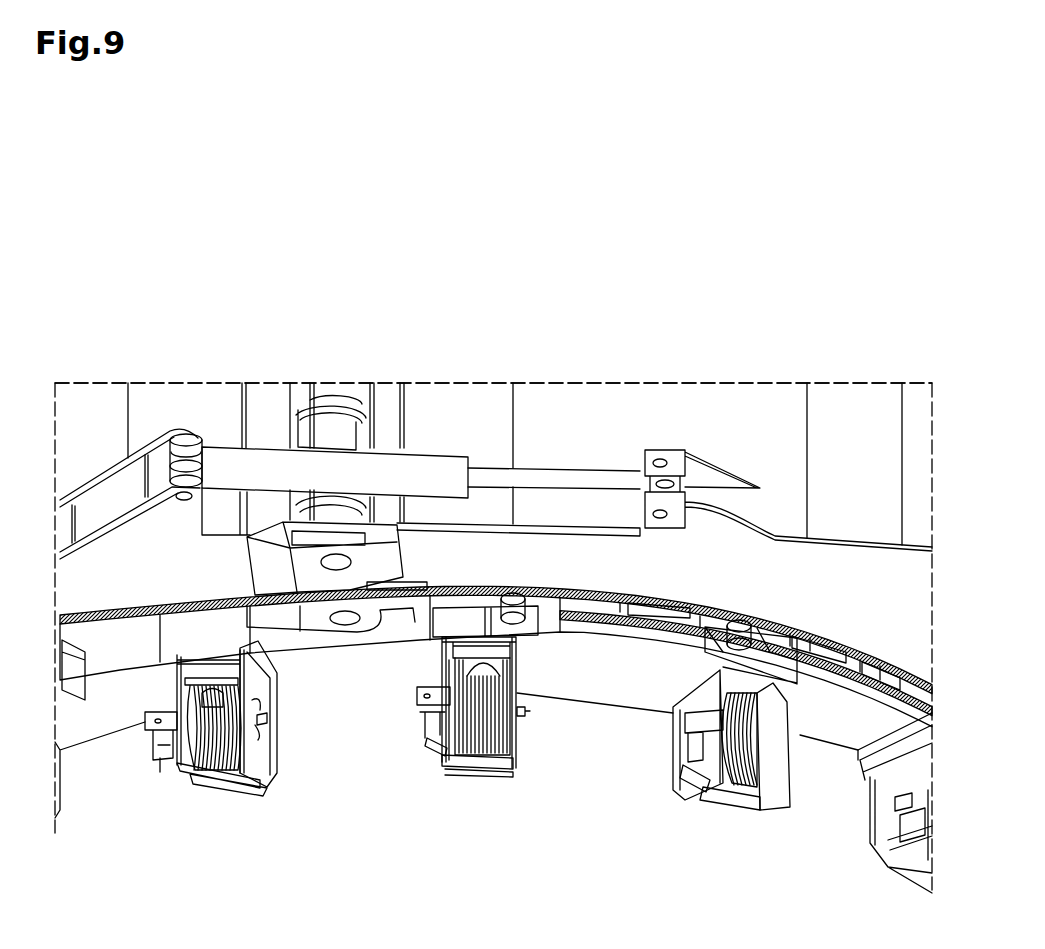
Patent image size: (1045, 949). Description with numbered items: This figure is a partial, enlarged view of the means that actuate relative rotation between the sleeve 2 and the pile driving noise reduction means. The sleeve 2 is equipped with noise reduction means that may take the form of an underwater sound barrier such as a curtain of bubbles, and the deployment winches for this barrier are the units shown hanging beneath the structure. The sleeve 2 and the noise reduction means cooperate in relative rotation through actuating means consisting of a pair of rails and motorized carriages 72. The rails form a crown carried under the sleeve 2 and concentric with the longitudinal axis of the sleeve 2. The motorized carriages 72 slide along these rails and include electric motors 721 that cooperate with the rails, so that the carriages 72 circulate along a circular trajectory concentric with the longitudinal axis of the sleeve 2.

The sleeve 2 is at (469, 376).
The electric motors 721 is at (746, 616).
The motorized carriages 72 is at (565, 680).